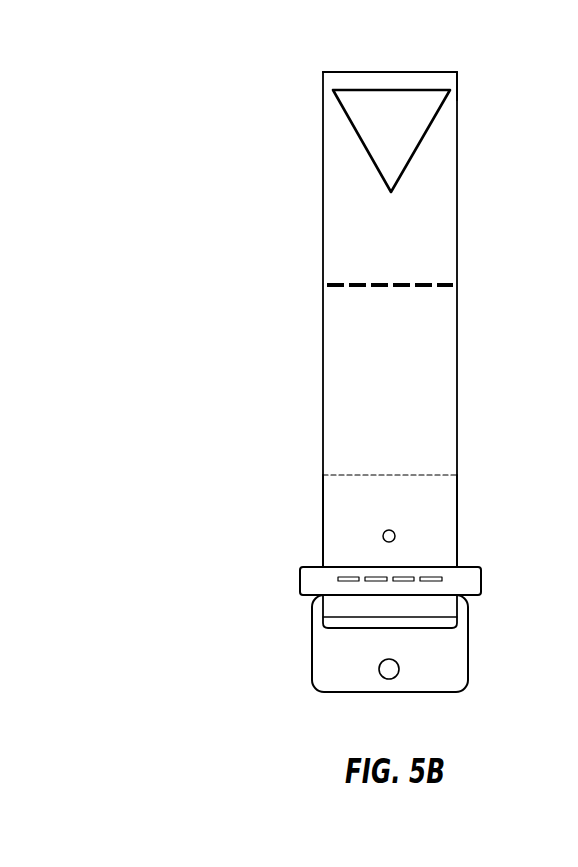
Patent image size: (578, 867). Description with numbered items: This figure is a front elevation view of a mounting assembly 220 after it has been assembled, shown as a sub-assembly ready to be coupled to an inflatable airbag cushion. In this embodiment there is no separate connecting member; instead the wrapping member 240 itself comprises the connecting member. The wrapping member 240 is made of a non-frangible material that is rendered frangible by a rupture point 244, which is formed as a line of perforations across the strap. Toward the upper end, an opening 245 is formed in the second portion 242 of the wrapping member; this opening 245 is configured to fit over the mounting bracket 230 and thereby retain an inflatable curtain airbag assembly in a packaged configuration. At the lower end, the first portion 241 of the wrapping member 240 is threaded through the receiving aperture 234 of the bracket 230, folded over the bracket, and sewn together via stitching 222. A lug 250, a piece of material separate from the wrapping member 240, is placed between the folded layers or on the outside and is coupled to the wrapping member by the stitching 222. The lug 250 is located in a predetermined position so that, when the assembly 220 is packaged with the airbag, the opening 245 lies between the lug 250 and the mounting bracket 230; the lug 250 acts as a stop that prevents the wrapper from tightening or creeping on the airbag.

The mounting assembly 220 is at (325, 57).
The wrapping member 240 is at (296, 216).
The second portion 242 is at (415, 77).
The opening 245 is at (392, 133).
The rupture point 244 is at (403, 283).
The first portion 241 is at (337, 547).
The stitching 222 is at (403, 576).
The lug 250 is at (315, 578).
The bracket 230 is at (455, 662).
The receiving aperture 234 is at (342, 623).